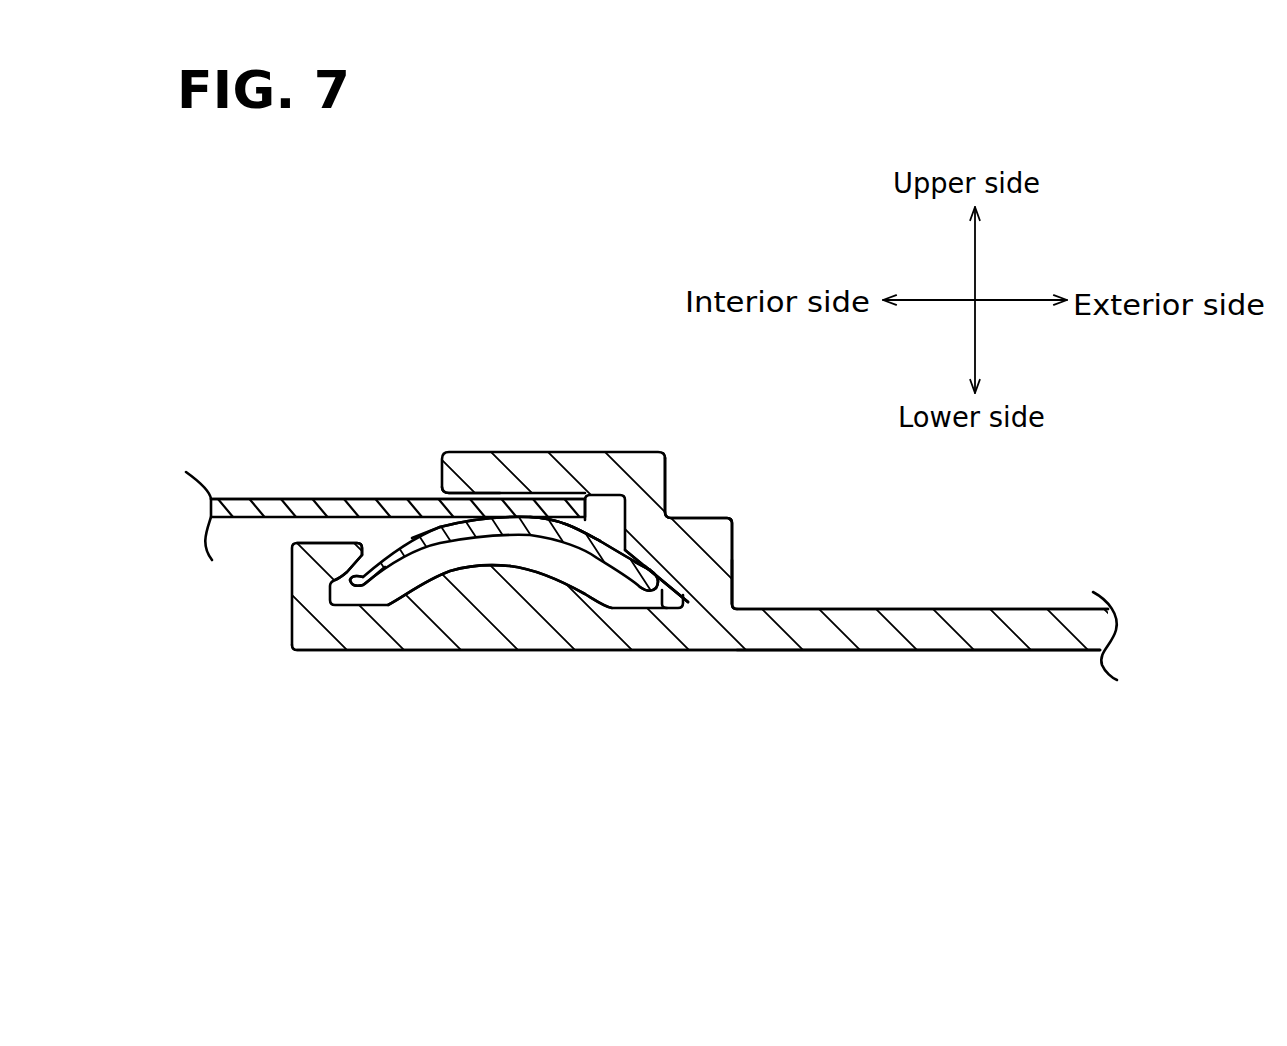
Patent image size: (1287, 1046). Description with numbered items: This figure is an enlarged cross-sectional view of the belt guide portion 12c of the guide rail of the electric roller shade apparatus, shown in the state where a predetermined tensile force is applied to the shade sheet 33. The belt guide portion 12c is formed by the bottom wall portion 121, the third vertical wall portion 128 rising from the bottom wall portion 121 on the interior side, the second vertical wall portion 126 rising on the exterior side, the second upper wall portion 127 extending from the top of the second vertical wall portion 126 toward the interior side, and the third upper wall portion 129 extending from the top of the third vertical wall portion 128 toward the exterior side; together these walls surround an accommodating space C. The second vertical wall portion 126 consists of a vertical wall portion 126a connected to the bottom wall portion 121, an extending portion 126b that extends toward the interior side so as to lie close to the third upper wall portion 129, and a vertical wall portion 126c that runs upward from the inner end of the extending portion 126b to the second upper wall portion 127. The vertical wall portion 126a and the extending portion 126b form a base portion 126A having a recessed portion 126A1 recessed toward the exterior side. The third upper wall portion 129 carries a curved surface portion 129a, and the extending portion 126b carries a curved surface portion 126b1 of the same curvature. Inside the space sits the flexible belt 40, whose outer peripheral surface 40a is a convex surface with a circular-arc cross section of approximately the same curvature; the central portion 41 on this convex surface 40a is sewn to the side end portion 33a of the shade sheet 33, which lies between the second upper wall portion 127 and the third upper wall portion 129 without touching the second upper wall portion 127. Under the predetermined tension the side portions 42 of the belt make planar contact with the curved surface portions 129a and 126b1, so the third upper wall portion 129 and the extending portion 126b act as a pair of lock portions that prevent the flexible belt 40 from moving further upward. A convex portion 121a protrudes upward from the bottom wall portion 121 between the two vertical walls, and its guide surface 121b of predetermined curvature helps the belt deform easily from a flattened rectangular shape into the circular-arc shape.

The shade sheet 33 is at (245, 530).
The side end portion 33a is at (503, 495).
The second upper wall portion 127 is at (545, 468).
The second vertical wall portion 126 is at (735, 514).
The base portion 126A is at (829, 538).
The recessed portion 126A1 is at (710, 635).
The vertical wall portion 126a is at (708, 597).
The extending portion 126b is at (688, 550).
The curved surface portion 126b1 is at (665, 575).
The vertical wall portion 126c is at (667, 467).
The third vertical wall portion 128 is at (330, 585).
The third upper wall portion 129 is at (335, 556).
The curved surface portion 129a is at (383, 572).
The flexible belt 40 is at (527, 548).
The outer peripheral surface 40a is at (607, 520).
The central portion 41 is at (600, 513).
The side portions 42 is at (373, 604).
The bottom wall portion 121 is at (622, 651).
The convex portion 121a is at (462, 592).
The guide surface 121b is at (470, 583).
The belt guide portion 12c is at (442, 407).
The accommodating space C is at (412, 467).